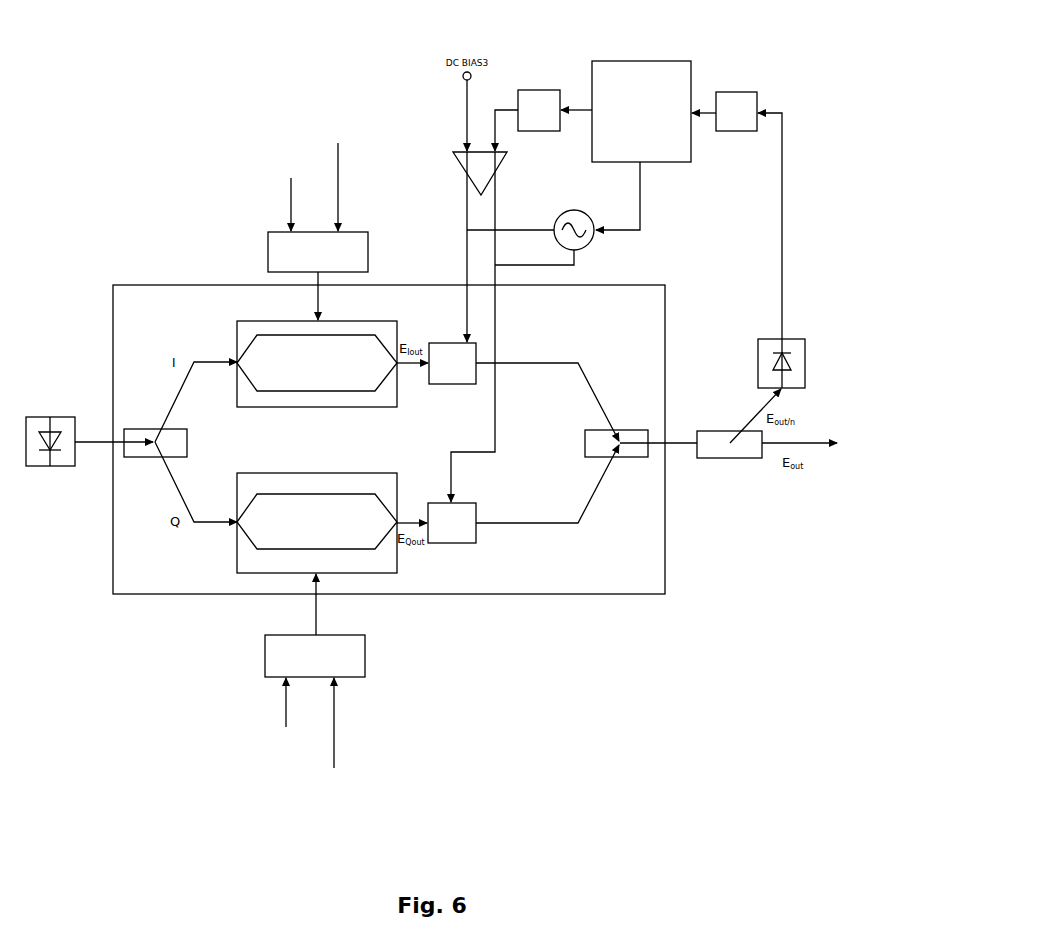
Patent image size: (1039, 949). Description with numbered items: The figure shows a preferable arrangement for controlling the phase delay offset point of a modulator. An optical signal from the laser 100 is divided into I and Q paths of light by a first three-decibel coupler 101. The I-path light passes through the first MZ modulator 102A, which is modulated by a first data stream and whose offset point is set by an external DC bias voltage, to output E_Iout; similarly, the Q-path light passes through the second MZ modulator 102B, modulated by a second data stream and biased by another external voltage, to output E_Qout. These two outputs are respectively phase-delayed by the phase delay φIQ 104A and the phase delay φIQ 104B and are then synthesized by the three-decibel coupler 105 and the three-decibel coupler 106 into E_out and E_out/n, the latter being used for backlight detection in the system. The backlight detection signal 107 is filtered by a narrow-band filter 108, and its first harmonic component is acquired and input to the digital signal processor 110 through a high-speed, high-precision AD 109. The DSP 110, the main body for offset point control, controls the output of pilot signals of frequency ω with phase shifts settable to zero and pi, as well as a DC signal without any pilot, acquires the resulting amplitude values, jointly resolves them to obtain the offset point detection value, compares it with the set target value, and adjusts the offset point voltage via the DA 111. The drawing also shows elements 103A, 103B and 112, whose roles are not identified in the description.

The laser 100 is at (63, 470).
The 3 dB coupler 101 is at (132, 424).
The MZ modulator 1 102A is at (253, 311).
The MZ modulator 2 102B is at (255, 580).
The driver for MZ modulator 1 103A is at (260, 238).
The driver for MZ modulator 2 103B is at (260, 657).
The phase delay φIQ 104A is at (483, 353).
The phase delay φIQ 104B is at (483, 537).
The 3 dB coupler 105 is at (633, 470).
The 3 dB coupler 106 is at (738, 470).
The backlight detection signal 107 is at (806, 353).
The narrow-band filter 108 is at (740, 80).
The AD 109 is at (642, 52).
The Digital Signal Processor (DSP) 110 is at (540, 82).
The DA 111 is at (453, 165).
The oscillator 112 is at (598, 250).